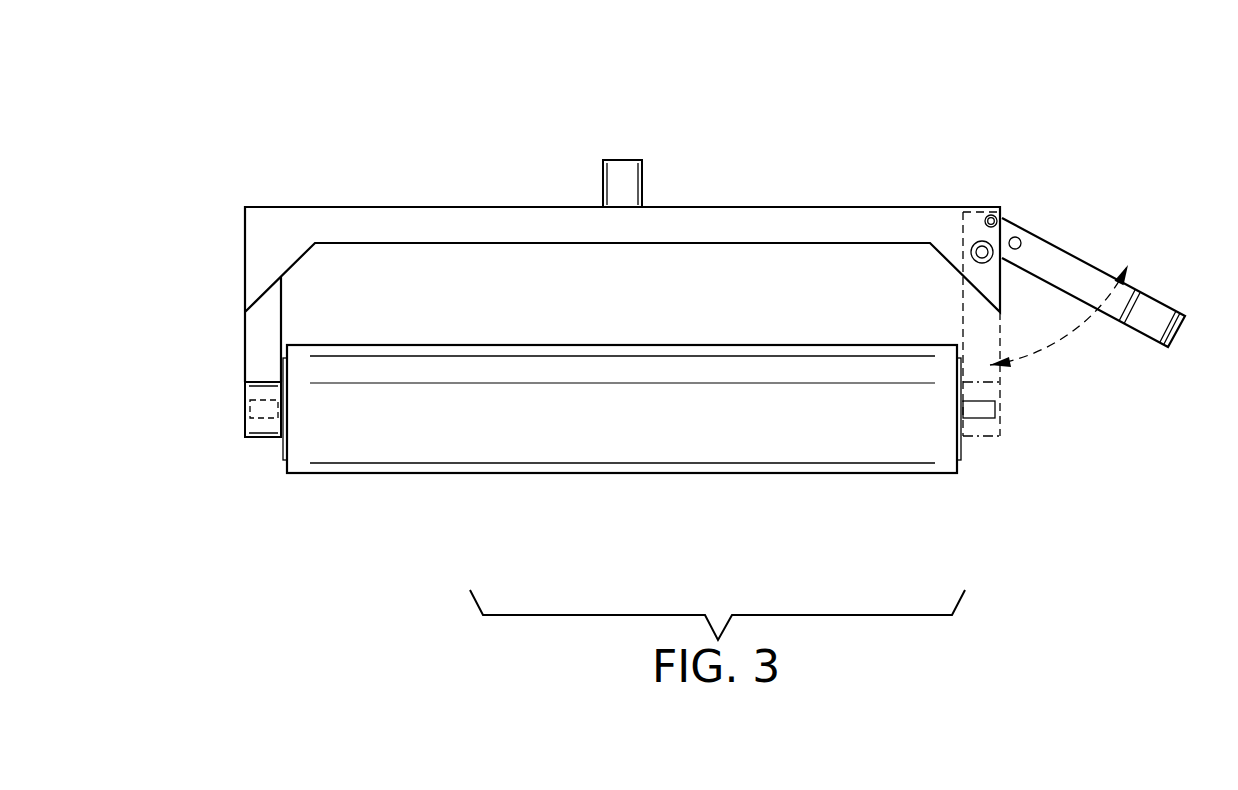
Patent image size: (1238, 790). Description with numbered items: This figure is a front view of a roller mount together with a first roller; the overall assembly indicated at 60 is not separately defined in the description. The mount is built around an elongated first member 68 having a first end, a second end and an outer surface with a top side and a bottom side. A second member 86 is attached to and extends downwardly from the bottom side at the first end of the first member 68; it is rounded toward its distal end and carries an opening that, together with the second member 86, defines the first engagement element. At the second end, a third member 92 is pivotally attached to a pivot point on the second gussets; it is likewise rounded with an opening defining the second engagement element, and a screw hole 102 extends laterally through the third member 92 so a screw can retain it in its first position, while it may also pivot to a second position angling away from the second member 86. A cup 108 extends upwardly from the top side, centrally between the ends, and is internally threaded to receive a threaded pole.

The roller assembly 60 is at (975, 163).
The first member 68 is at (728, 207).
The second member 86 is at (245, 361).
The third member 92 is at (1085, 270).
The screw hole 102 is at (1016, 237).
The cup 108 is at (603, 182).